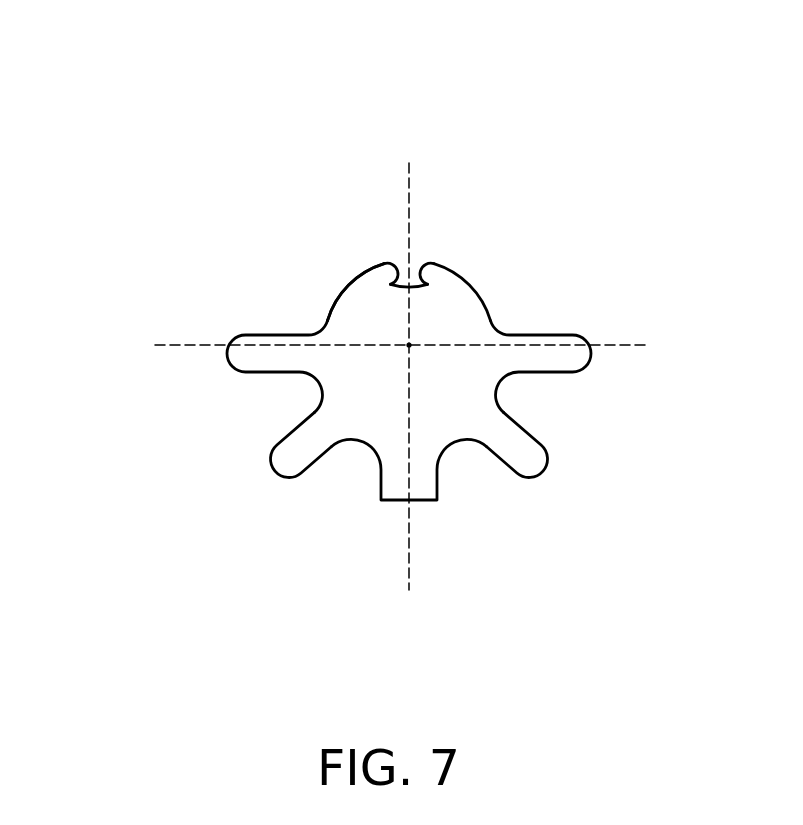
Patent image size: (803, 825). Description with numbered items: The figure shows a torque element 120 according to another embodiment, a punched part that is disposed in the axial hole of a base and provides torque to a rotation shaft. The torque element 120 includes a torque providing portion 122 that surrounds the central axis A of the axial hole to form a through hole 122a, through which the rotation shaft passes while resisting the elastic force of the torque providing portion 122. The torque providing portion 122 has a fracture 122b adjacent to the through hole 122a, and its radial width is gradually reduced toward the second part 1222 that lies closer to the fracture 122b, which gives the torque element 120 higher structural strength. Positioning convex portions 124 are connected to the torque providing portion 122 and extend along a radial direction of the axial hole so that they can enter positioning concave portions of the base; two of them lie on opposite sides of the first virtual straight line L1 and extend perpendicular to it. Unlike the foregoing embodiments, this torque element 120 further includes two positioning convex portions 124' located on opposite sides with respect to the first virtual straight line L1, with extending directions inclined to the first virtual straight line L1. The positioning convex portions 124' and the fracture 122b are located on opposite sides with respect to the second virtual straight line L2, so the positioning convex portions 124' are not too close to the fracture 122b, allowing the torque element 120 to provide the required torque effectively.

The torque element 120 is at (58, 50).
The torque providing portion 122 is at (465, 292).
The second part 1222 is at (333, 313).
The through hole 122a is at (354, 324).
The fracture 122b is at (414, 268).
The positioning convex portion 124 is at (406, 460).
The positioning convex portion 124' is at (403, 465).
The central axis A is at (409, 345).
The first virtual straight line L1 is at (408, 190).
The second virtual straight line L2 is at (188, 340).